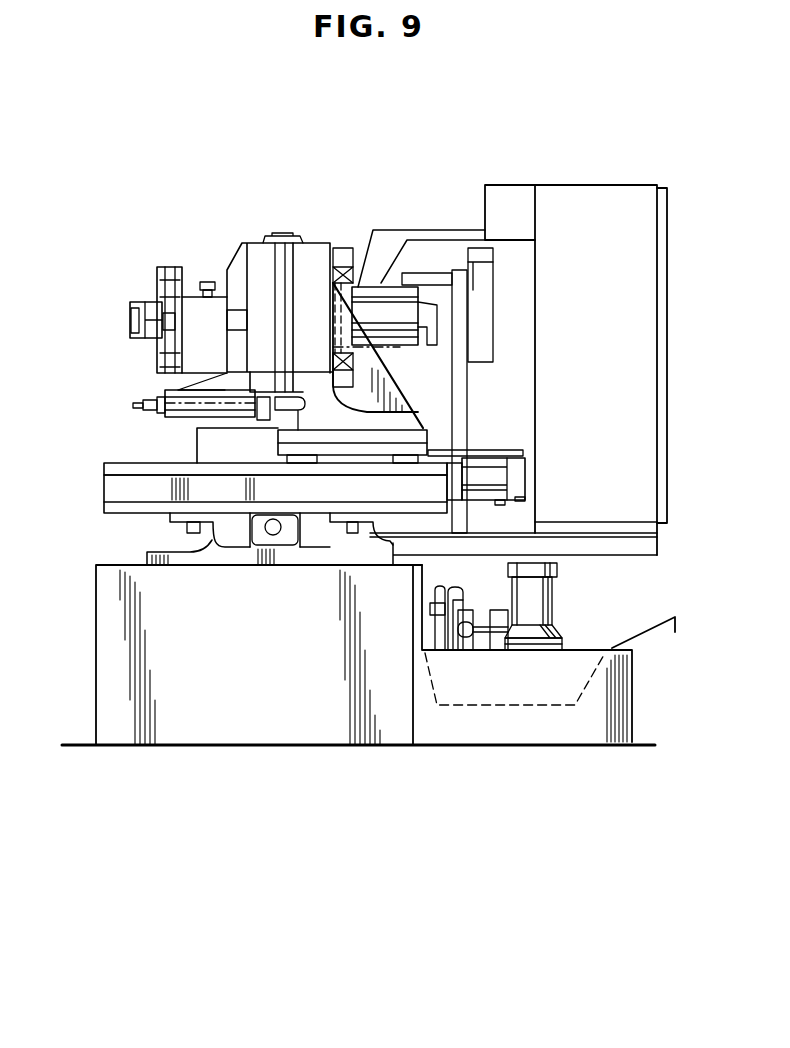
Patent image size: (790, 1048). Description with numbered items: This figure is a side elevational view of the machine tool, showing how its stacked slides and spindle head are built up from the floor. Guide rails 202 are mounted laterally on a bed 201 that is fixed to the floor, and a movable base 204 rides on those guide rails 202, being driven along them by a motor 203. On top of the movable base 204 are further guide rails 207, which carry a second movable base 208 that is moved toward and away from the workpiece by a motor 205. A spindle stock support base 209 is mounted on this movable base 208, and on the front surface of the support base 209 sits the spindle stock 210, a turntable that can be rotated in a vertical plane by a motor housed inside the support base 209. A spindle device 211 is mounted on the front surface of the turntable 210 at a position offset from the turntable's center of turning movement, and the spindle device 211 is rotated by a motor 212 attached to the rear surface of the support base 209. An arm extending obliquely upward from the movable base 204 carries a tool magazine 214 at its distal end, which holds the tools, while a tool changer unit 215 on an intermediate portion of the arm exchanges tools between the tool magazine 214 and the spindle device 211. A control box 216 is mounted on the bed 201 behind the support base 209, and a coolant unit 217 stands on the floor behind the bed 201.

The bed 201 is at (108, 646).
The guide rails 202 is at (193, 533).
The motor 203 is at (262, 540).
The movable base 204 is at (113, 487).
The motor 205 is at (487, 466).
The guide rails 207 is at (131, 466).
The movable base 208 is at (388, 425).
The spindle stock support base 209 is at (312, 263).
The spindle stock 210 is at (258, 263).
The spindle device 211 is at (178, 395).
The motor 212 is at (407, 300).
The tool magazine 214 is at (173, 273).
The tool changer unit 215 is at (145, 298).
The control box 216 is at (581, 203).
The coolant unit 217 is at (607, 694).